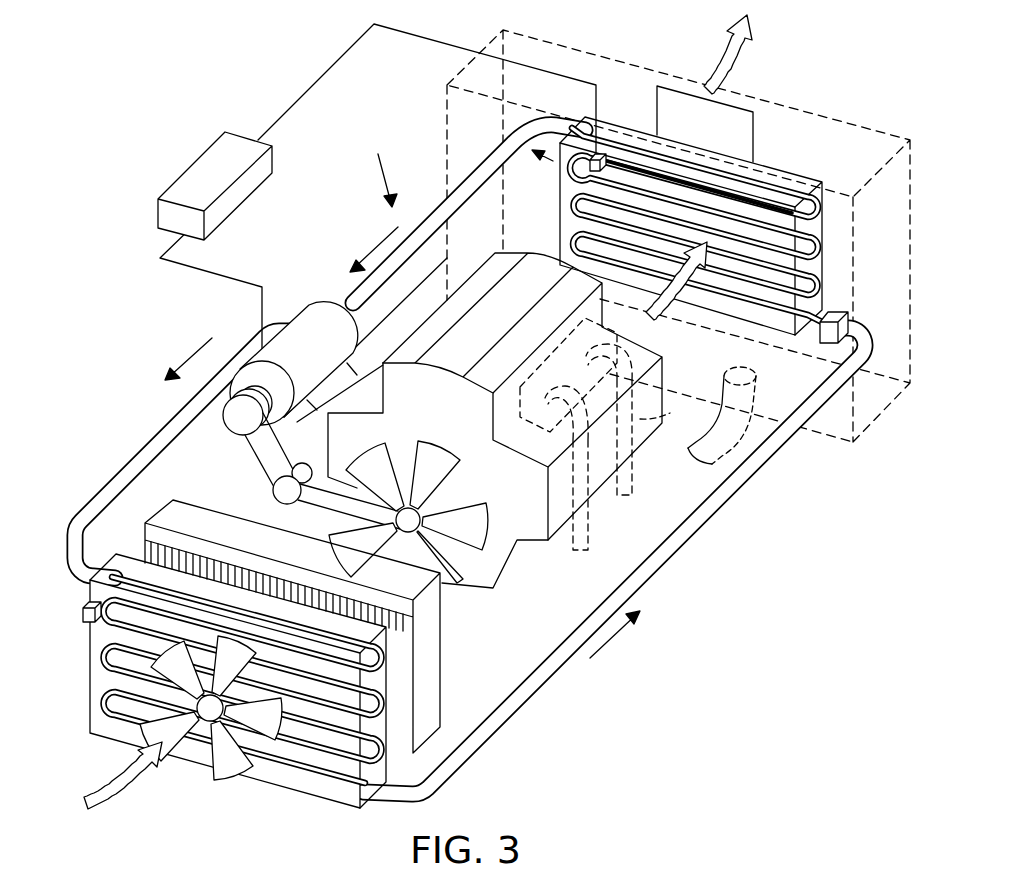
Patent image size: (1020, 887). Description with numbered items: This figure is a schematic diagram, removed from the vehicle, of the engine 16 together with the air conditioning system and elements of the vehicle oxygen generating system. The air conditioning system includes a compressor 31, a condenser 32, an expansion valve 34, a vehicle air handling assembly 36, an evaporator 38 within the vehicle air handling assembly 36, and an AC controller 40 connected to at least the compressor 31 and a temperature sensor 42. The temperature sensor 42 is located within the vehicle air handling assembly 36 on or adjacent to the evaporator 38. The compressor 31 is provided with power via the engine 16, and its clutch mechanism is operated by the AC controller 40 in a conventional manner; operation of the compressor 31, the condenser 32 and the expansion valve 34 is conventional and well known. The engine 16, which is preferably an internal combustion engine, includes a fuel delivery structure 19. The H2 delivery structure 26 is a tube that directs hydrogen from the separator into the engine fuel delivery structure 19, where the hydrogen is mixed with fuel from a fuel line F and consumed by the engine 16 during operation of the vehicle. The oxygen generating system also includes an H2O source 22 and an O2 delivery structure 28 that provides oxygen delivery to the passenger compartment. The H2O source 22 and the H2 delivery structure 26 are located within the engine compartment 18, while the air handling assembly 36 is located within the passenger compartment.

The H2O source 22 is at (230, 78).
The engine compartment 18 is at (281, 255).
The AC controller 40 is at (240, 192).
The compressor 31 is at (318, 337).
The engine 16 is at (525, 512).
The fuel delivery structure 19 is at (595, 372).
The H2 delivery structure 26 is at (592, 513).
The fuel line F is at (663, 413).
The O2 delivery structure 28 is at (760, 462).
The vehicle air handling assembly 36 is at (855, 125).
The evaporator 38 is at (788, 186).
The temperature sensor 42 is at (580, 176).
The expansion valve 34 is at (835, 314).
The condenser 32 is at (86, 599).